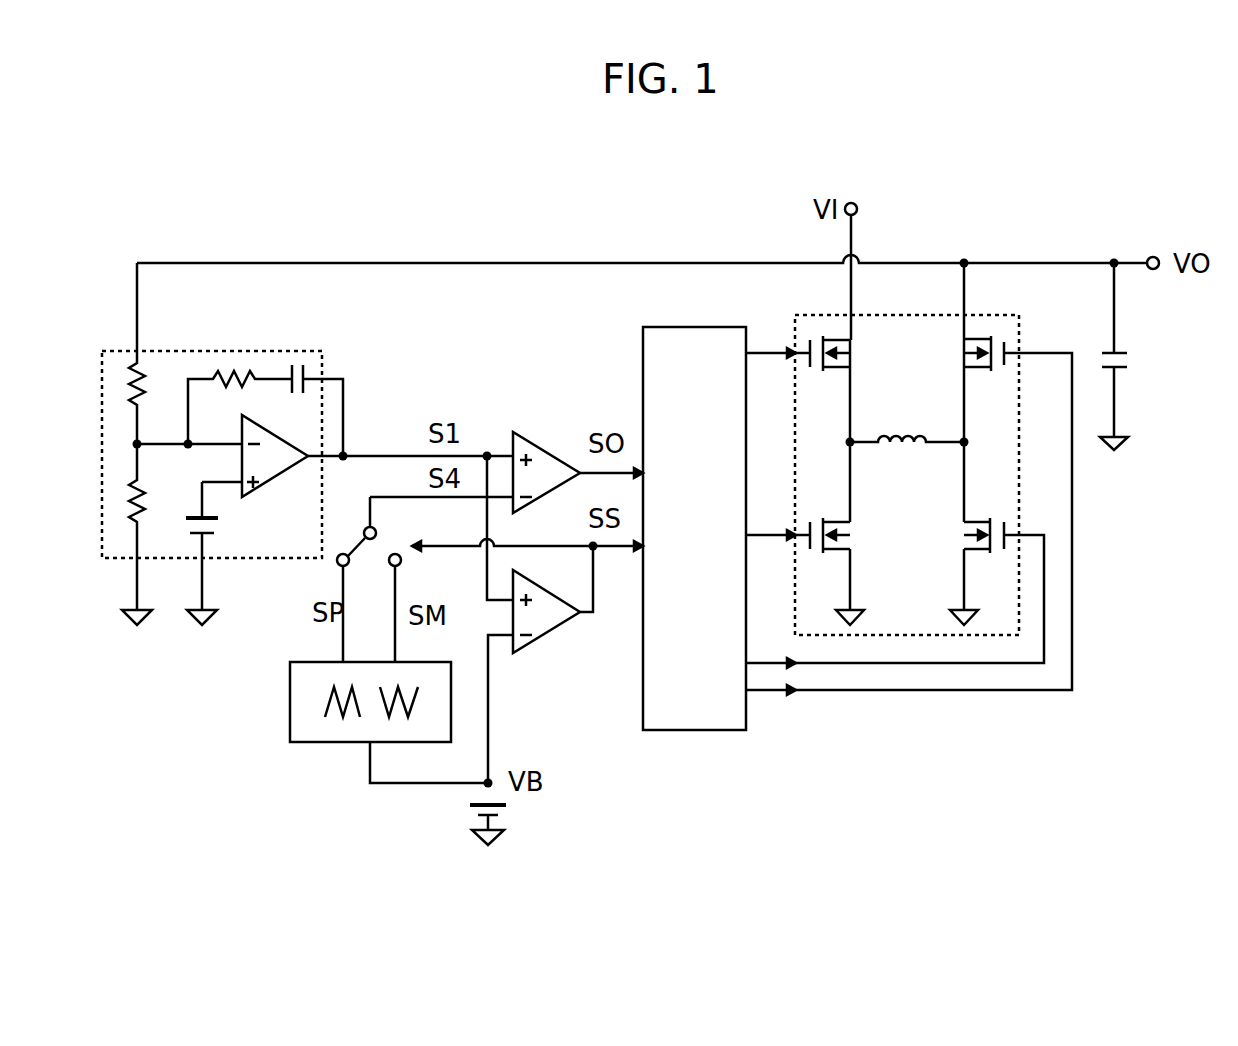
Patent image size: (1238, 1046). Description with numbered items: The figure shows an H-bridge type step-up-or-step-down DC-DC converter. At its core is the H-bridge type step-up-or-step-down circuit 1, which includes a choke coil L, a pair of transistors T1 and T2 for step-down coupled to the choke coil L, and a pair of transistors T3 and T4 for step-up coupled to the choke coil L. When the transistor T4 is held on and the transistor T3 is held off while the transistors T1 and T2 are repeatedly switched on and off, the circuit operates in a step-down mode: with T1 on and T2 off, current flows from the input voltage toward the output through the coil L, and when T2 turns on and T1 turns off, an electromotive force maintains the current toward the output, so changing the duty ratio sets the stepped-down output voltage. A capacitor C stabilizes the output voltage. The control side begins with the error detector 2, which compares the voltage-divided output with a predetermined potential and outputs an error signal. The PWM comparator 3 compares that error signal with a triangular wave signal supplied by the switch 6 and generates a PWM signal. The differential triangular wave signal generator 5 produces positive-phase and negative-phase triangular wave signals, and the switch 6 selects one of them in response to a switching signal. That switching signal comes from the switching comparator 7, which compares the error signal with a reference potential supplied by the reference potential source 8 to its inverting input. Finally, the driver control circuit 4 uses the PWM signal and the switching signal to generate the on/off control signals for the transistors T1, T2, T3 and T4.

The H-bridge type step-up-or-step-down circuit 1 is at (931, 449).
The error detector 2 is at (290, 350).
The PWM comparator 3 is at (542, 446).
The driver control circuit 4 is at (663, 326).
The differential triangular wave signal generator 5 is at (290, 722).
The switch 6 is at (328, 569).
The switching comparator 7 is at (552, 628).
The reference potential source 8 is at (518, 811).
The transistor for step-down T1 is at (815, 372).
The transistor for step-down T2 is at (815, 555).
The transistor for step-up T3 is at (1000, 555).
The transistor for step-up T4 is at (997, 372).
The choke coil L is at (903, 452).
The capacitor C is at (1130, 364).